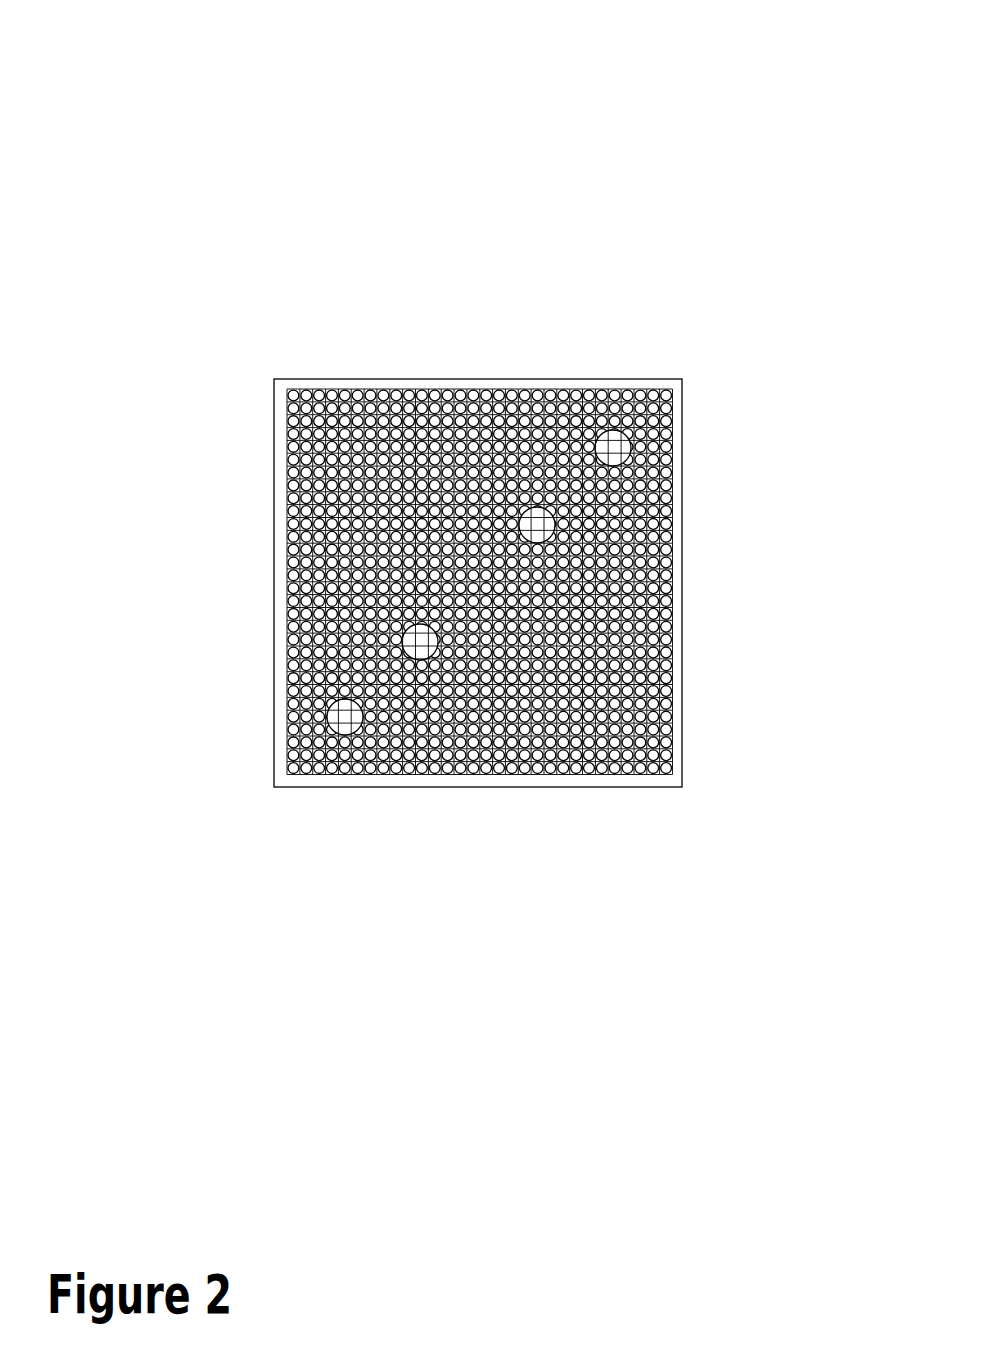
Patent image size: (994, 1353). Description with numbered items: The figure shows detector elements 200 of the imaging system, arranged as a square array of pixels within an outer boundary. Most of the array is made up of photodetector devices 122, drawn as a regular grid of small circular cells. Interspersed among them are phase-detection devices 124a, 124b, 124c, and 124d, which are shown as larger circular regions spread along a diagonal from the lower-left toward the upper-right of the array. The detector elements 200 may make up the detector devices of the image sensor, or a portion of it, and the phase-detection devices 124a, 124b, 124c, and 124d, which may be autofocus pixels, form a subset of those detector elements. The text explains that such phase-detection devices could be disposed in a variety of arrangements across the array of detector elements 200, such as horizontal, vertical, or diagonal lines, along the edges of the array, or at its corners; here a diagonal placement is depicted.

The detector elements 200 is at (868, 70).
The photodetector devices 122 is at (412, 410).
The phase-detection device 124a is at (343, 712).
The phase-detection device 124b is at (410, 638).
The phase-detection device 124c is at (538, 507).
The phase-detection device 124d is at (613, 437).